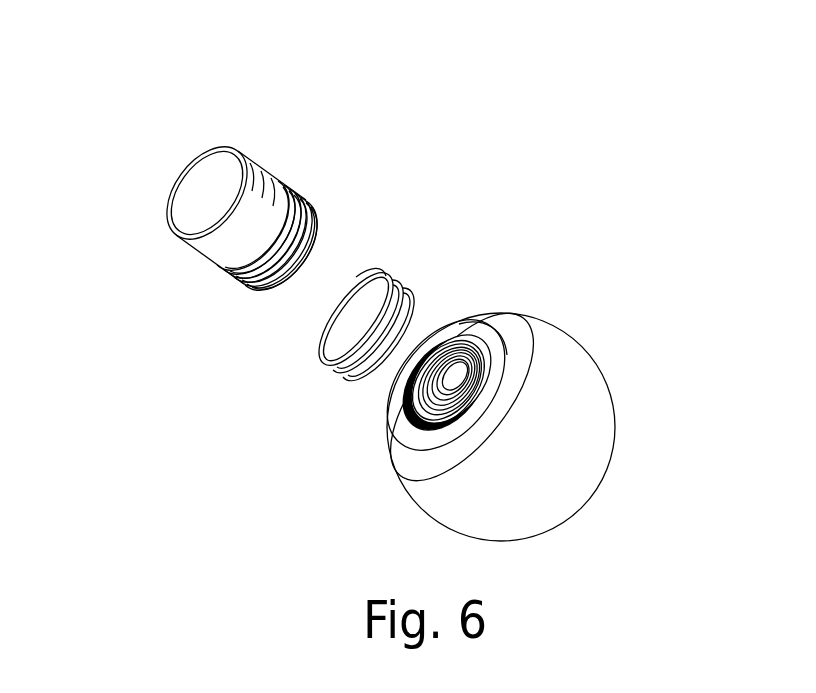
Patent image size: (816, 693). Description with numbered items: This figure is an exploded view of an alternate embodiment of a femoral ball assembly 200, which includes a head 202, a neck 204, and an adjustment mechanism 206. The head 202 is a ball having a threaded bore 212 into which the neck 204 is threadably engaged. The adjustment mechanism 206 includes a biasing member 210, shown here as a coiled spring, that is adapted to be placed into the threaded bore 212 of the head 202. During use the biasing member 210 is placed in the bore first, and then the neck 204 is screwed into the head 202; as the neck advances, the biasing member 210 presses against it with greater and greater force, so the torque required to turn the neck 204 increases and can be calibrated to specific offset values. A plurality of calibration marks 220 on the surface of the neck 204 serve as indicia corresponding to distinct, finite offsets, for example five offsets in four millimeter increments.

The femoral ball assembly 200 is at (547, 117).
The head 202 is at (473, 402).
The neck 204 is at (185, 204).
The adjustment mechanism 206 is at (277, 390).
The biasing member 210 is at (390, 292).
The threaded bore 212 is at (405, 408).
The calibration marks 220 is at (270, 163).